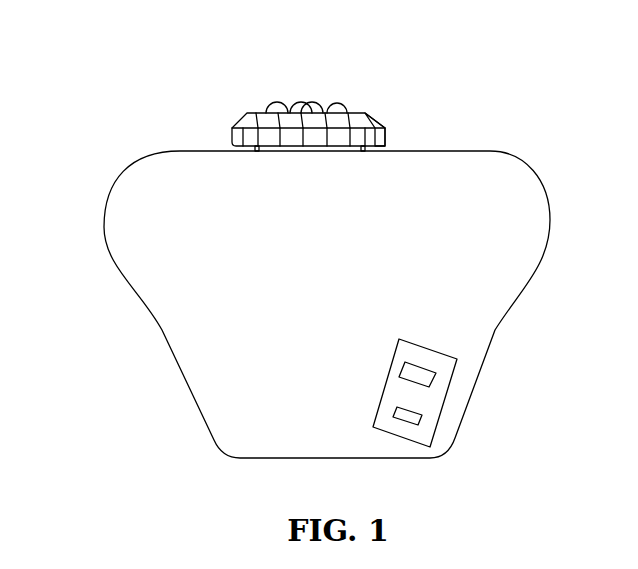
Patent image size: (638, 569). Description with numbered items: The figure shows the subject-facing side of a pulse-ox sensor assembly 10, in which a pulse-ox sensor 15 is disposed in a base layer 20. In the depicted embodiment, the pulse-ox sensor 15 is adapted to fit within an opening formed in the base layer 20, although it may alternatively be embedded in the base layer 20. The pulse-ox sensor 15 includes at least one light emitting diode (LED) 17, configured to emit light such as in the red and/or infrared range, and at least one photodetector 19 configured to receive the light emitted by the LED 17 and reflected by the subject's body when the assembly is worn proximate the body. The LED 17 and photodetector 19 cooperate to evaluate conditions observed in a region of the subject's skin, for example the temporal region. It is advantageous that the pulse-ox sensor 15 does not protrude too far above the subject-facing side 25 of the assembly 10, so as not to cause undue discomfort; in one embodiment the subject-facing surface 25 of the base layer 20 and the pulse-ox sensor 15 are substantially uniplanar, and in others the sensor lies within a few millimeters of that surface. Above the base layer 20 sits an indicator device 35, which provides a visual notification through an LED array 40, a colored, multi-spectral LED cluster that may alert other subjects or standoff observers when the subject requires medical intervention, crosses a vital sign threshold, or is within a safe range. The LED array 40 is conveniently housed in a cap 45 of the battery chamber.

The pulse-ox sensor assembly 10 is at (95, 98).
The pulse-ox sensor 15 is at (445, 405).
The light emitting diode (LED) 17 is at (410, 415).
The photodetector 19 is at (423, 377).
The base layer 20 is at (542, 180).
The subject-facing side 25 is at (362, 253).
The indicator device 35 is at (227, 56).
The LED array 40 is at (263, 90).
The cap 45 is at (382, 123).